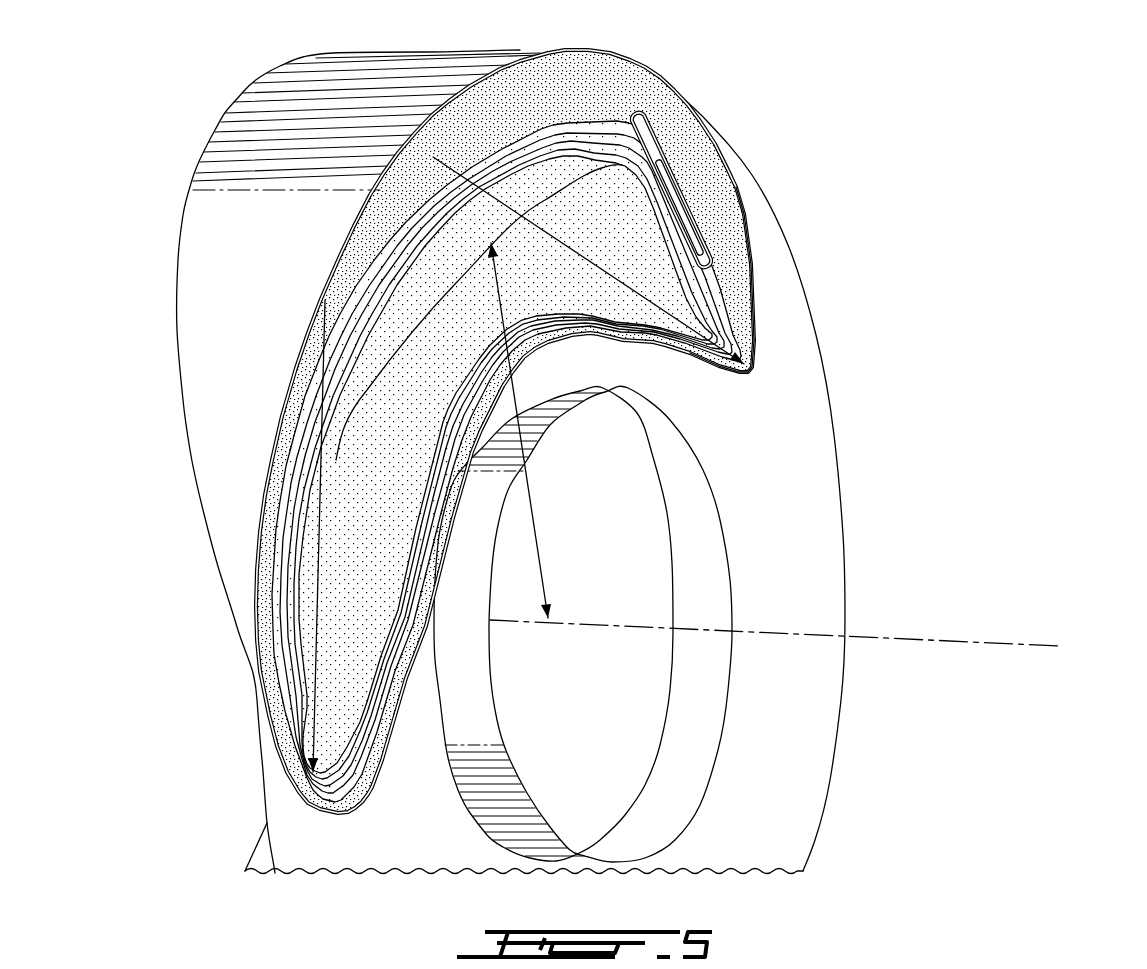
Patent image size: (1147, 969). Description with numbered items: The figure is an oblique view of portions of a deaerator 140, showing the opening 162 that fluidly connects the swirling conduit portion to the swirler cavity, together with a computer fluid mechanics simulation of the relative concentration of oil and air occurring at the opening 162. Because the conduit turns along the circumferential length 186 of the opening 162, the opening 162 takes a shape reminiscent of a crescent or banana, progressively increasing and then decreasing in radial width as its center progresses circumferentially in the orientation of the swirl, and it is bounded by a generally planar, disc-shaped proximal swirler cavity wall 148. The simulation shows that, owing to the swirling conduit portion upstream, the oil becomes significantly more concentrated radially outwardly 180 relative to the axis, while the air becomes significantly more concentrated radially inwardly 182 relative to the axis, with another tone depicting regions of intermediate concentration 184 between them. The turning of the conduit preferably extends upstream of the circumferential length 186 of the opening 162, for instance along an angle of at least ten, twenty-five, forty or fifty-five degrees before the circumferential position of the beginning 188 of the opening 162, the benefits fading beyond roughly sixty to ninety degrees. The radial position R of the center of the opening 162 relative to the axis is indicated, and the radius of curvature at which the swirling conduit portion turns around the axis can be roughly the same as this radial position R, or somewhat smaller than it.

The deaerator 140 is at (584, 461).
The proximal swirler cavity wall 148 is at (789, 782).
The opening 162 is at (677, 193).
The radially outward region of oil concentration 180 is at (587, 92).
The radially inward region of air concentration 182 is at (543, 260).
The region of intermediate concentration 184 is at (685, 315).
The circumferential length of the opening 186 is at (410, 323).
The beginning of the opening 188 is at (750, 357).
The radial position of the center of the opening R is at (515, 433).